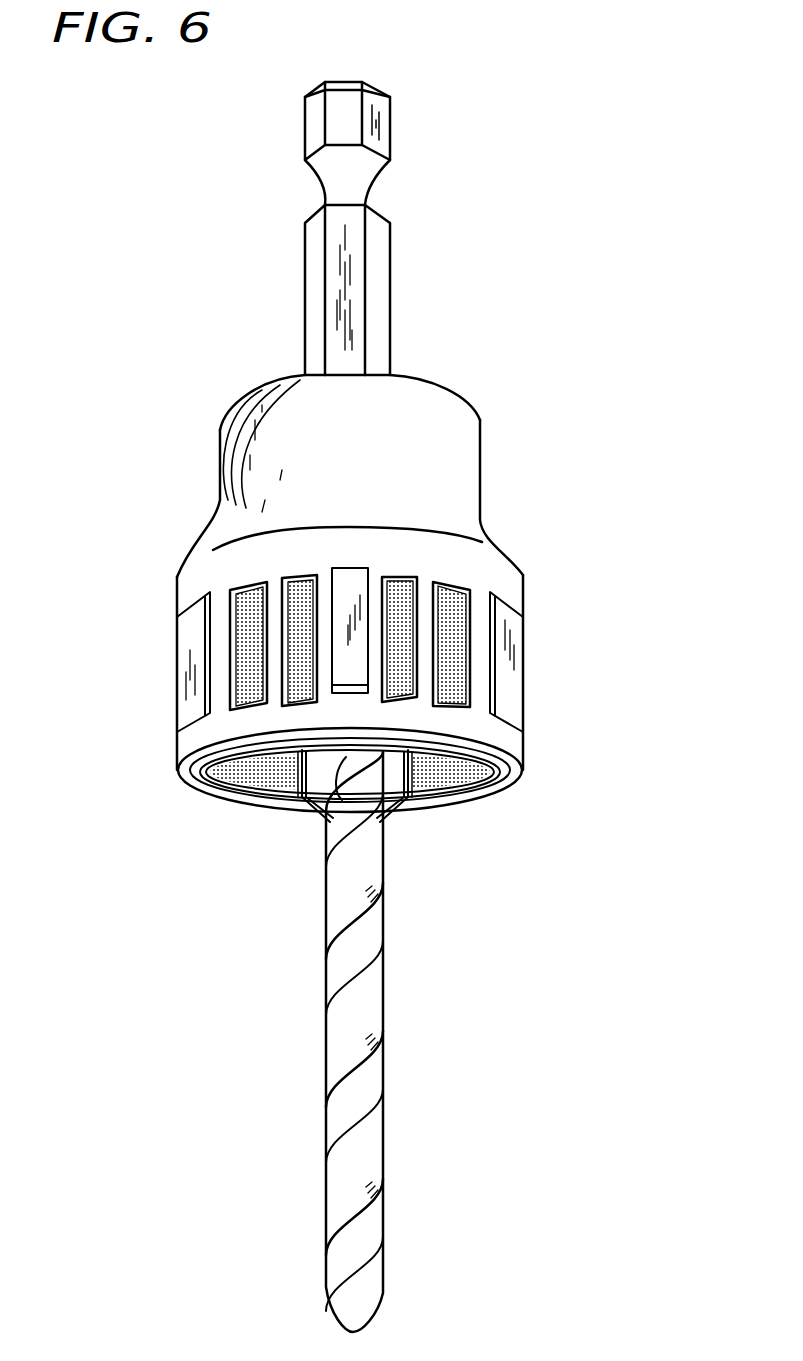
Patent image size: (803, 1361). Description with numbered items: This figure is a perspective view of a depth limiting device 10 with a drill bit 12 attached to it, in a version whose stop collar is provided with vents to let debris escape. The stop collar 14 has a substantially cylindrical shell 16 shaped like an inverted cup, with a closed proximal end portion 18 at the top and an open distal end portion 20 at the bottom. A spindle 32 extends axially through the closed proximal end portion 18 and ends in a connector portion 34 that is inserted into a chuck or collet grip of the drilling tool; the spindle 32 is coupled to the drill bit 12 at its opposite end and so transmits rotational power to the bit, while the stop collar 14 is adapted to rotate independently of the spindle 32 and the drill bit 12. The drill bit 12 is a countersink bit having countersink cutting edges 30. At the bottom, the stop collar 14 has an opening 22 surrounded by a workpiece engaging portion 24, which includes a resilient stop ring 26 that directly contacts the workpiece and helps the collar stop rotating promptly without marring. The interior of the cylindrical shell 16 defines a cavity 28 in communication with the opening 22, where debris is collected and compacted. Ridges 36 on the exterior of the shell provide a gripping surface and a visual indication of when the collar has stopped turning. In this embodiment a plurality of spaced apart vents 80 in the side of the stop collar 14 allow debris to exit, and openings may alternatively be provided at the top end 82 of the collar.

The depth limiting device 10 is at (575, 240).
The drill bit 12 is at (386, 1143).
The stop collar 14 is at (489, 426).
The cylindrical shell 16 is at (483, 487).
The closed proximal end portion 18 is at (437, 359).
The open distal end portion 20 is at (187, 837).
The opening 22 is at (470, 783).
The workpiece engaging portion 24 is at (506, 776).
The stop ring 26 is at (205, 770).
The cavity 28 is at (436, 776).
The countersink cutting edges 30 is at (287, 788).
The spindle 32 is at (298, 294).
The connector portion 34 is at (395, 130).
The ridges 36 is at (524, 666).
The vents 80 is at (459, 605).
The top end 82 is at (252, 390).